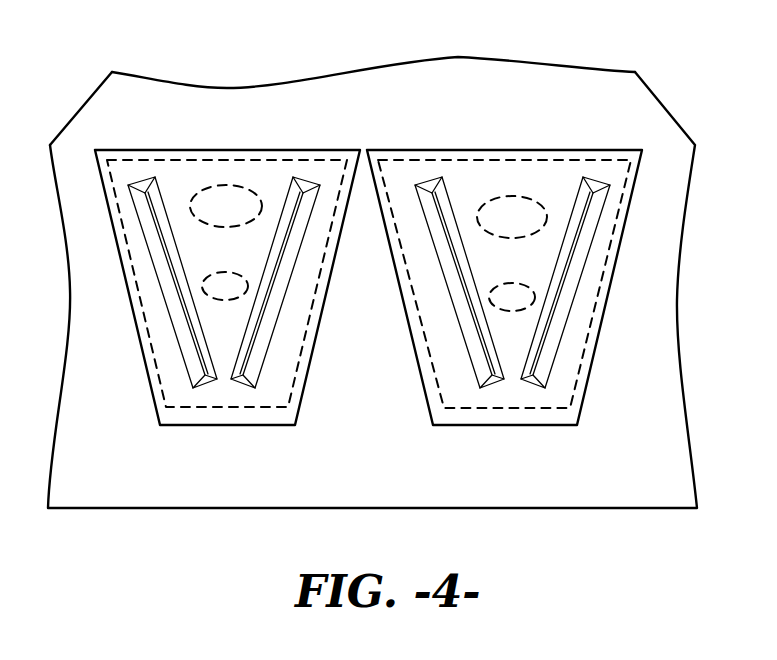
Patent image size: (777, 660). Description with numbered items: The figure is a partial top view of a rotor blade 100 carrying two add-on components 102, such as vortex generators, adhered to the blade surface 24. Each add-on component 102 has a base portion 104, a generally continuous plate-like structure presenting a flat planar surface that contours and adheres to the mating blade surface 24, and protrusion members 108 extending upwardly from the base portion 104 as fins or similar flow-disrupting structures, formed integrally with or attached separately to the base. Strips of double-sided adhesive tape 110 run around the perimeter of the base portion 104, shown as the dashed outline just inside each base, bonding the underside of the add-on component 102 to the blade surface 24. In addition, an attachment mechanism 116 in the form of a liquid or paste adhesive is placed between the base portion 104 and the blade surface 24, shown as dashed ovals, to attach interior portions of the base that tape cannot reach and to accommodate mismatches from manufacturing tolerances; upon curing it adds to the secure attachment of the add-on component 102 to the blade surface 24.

The blade surface 24 is at (180, 97).
The tread block body 100 is at (372, 260).
The add-on component 102 is at (312, 137).
The base portion 104 is at (361, 274).
The protrusion member 108 is at (152, 227).
The double-sided adhesive tape 110 is at (163, 388).
The attachment mechanism 116 is at (230, 200).